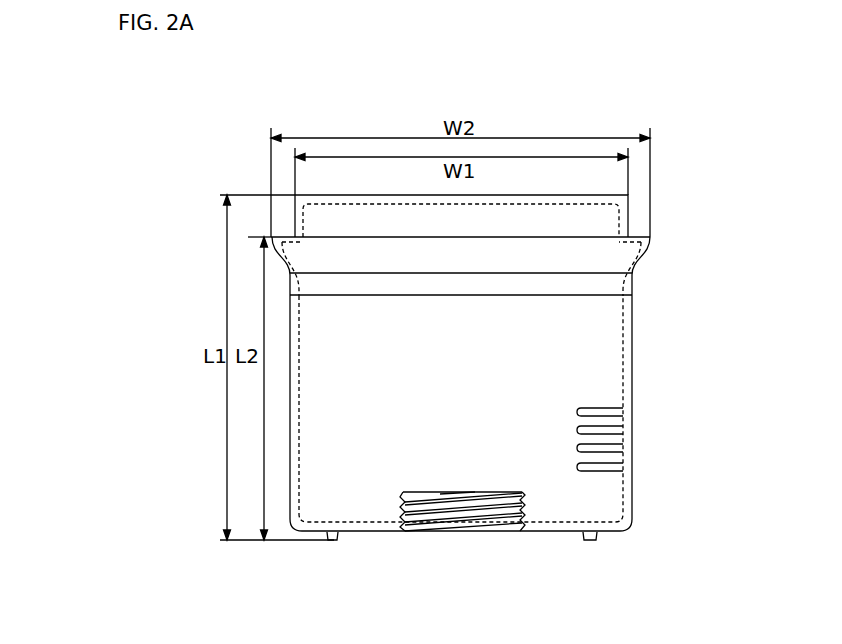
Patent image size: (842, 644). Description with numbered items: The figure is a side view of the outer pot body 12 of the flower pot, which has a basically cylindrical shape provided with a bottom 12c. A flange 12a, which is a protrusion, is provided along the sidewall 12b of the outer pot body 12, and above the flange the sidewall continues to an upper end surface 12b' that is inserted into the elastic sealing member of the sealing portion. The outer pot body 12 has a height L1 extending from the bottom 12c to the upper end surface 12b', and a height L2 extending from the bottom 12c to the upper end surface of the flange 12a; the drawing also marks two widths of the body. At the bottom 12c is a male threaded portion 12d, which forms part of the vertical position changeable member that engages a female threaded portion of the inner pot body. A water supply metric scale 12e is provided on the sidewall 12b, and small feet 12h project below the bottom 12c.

The outer pot body 12 is at (680, 47).
The flange 12a is at (644, 262).
The sidewall 12b is at (514, 409).
The upper end surface 12b' is at (525, 209).
The bottom 12c is at (557, 533).
The male threaded portion 12d is at (443, 533).
The water supply metric scale 12e is at (608, 477).
The left foot 12h is at (333, 542).